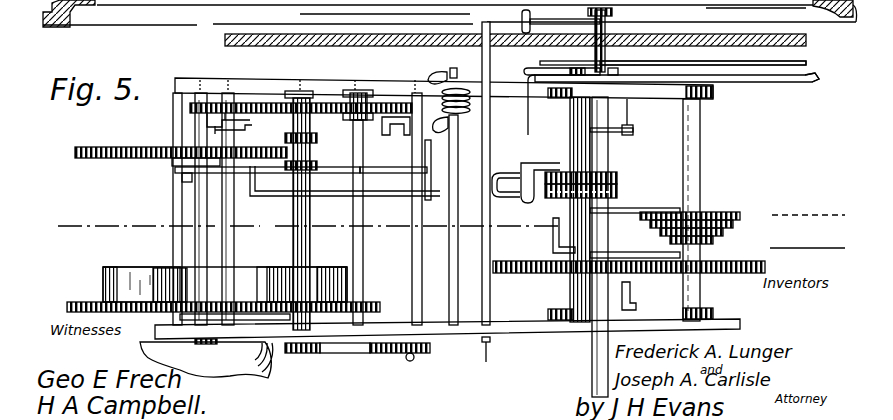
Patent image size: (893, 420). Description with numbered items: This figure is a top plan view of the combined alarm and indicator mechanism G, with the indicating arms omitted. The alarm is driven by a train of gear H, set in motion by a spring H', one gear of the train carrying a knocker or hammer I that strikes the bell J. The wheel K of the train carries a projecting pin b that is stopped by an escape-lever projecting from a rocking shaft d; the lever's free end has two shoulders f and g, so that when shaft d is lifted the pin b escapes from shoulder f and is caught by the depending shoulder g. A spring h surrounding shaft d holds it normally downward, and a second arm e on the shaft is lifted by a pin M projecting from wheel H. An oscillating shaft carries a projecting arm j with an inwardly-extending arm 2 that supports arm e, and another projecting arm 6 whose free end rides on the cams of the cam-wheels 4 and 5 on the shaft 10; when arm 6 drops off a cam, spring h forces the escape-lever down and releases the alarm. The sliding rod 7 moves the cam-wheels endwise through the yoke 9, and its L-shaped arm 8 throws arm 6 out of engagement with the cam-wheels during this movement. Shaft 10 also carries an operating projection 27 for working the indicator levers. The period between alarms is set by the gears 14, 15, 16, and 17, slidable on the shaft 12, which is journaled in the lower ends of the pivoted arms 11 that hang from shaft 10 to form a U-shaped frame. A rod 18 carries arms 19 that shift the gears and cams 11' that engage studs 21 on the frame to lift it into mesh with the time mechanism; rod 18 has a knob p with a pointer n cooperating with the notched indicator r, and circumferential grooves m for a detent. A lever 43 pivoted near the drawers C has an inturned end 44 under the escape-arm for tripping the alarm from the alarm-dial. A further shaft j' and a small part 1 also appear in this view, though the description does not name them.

The rod 1 is at (658, 137).
The inwardly-extending arm 2 is at (345, 181).
The cam-wheel 4 is at (617, 178).
The cam-wheel 5 is at (617, 190).
The projecting arm 6 is at (460, 196).
The sliding rod 7 is at (510, 293).
The L-shaped arm 8 is at (493, 175).
The yoke 9 is at (537, 163).
The shaft 10 is at (590, 150).
The pivoted arms 11 is at (650, 203).
The cams 11' is at (637, 203).
The shaft 12 is at (700, 155).
The gear 14 is at (733, 212).
The gear 15 is at (736, 224).
The gear 16 is at (722, 240).
The gear 17 is at (672, 243).
The rod 18 is at (593, 345).
The arms 19 is at (660, 210).
The studs or pins 21 is at (650, 290).
The operating projection 27 is at (553, 232).
The lever 43 is at (800, 64).
The end of lever 44 is at (412, 135).
The projecting pin b is at (205, 118).
The drawers C is at (315, 128).
The rocking shaft d is at (449, 145).
The laterally-projecting arm e is at (440, 178).
The projecting shoulder f is at (215, 130).
The projecting shoulder g is at (212, 115).
The combined alarm and indicator mechanism G is at (441, 330).
The spring h is at (457, 90).
The train of gear H is at (181, 165).
The spring H' is at (213, 289).
The knocker or hammer I is at (408, 360).
The projecting arm j is at (253, 209).
The shaft j' is at (398, 209).
The bell J is at (266, 378).
The wheel K is at (444, 75).
The circumferential grooves m is at (608, 58).
The pin M is at (183, 178).
The pointer n is at (570, 22).
The handle or knob p is at (612, 26).
The projecting indicator r is at (516, 20).